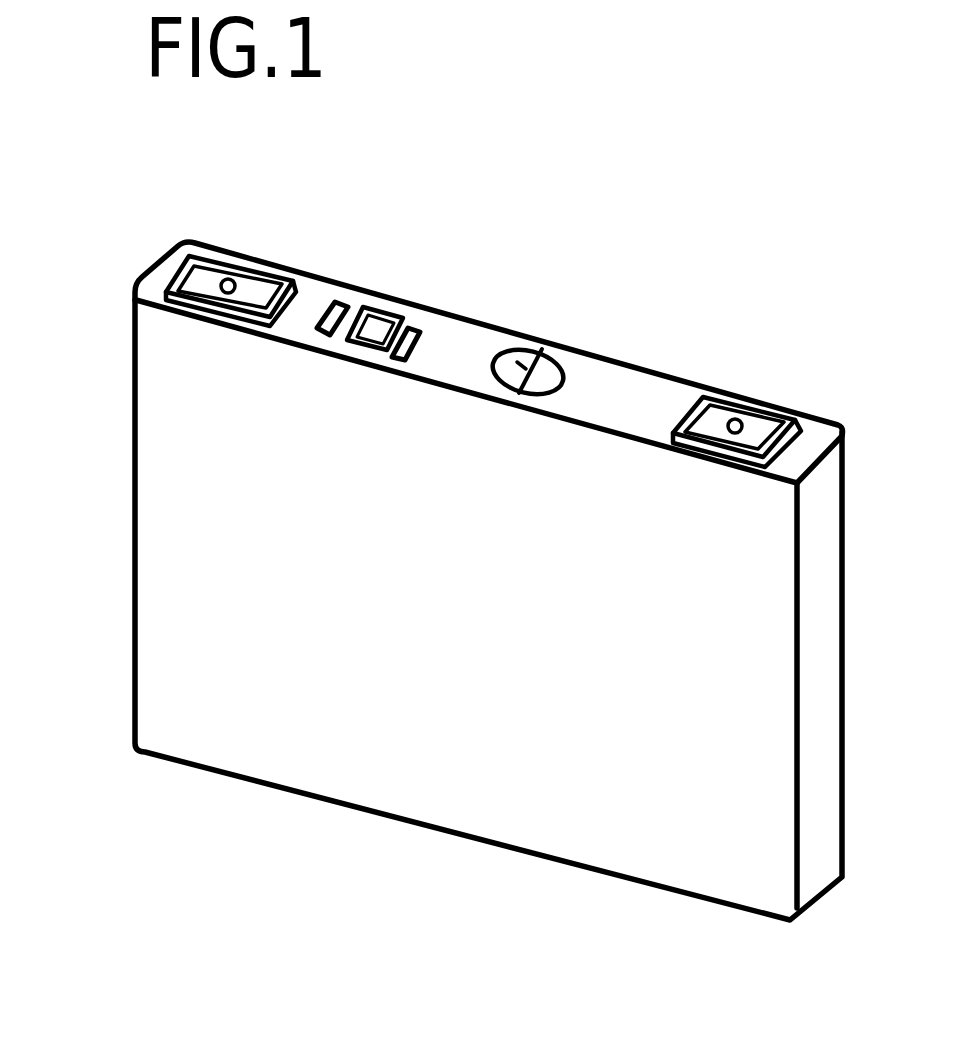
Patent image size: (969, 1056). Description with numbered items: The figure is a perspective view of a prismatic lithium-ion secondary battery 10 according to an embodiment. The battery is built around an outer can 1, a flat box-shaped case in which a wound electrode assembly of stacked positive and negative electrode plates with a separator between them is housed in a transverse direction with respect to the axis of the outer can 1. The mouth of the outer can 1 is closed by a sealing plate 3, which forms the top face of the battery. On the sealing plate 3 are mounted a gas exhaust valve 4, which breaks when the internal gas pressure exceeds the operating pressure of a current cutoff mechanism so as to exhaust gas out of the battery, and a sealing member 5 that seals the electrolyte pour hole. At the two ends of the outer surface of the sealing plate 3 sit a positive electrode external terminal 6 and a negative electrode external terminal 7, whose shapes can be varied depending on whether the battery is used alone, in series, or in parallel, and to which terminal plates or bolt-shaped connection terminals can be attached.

The prismatic lithium-ion secondary battery 10 is at (660, 100).
The outer can 1 is at (247, 705).
The sealing plate 3 is at (608, 387).
The gas exhaust valve 4 is at (537, 350).
The sealing member 5 is at (399, 318).
The positive electrode external terminal 6 is at (768, 398).
The negative electrode external terminal 7 is at (232, 260).